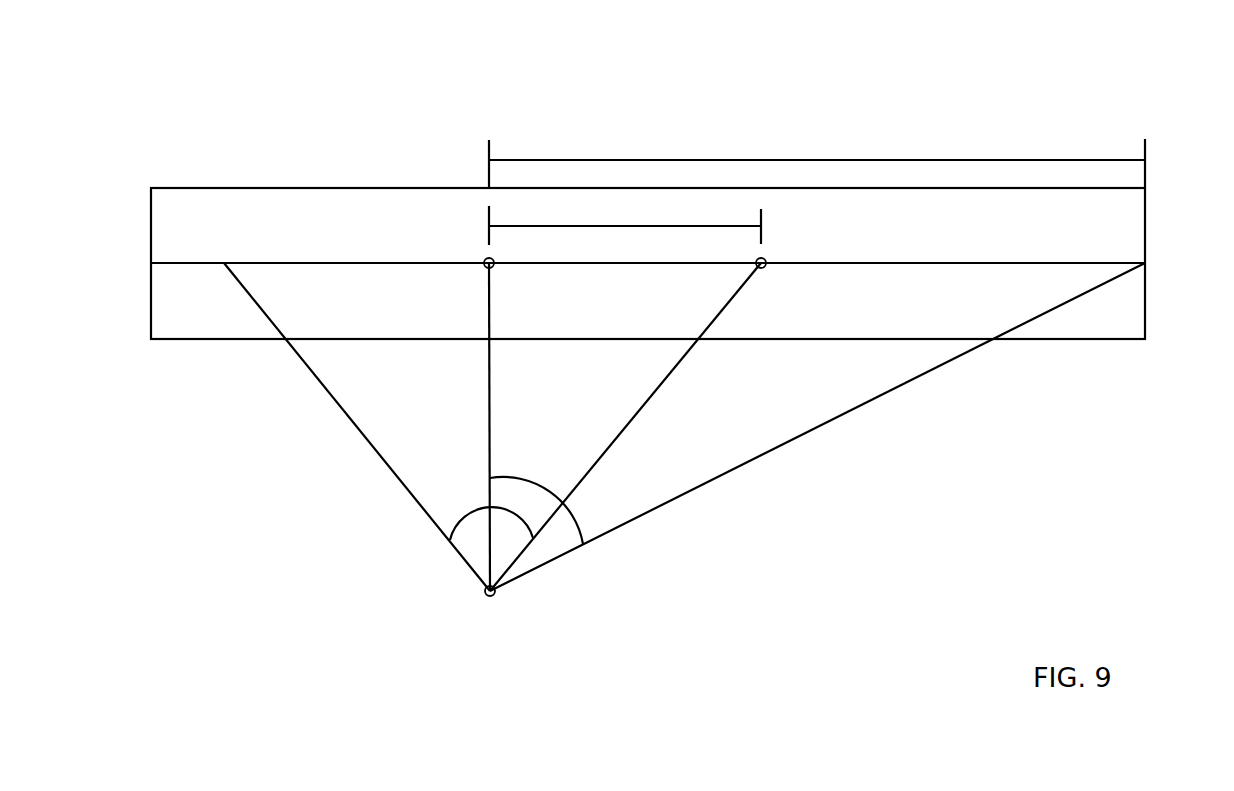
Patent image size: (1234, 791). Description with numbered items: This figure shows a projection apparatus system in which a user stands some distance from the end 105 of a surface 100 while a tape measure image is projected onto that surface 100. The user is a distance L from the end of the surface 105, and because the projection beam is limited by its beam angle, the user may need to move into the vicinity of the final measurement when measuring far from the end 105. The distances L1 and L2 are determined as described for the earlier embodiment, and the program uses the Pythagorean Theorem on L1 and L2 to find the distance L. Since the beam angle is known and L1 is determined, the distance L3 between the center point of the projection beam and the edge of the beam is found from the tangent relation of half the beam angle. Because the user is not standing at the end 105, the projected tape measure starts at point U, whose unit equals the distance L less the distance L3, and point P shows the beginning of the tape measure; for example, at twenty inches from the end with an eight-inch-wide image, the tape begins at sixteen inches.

The surface 100 is at (226, 188).
The end of the surface 105 is at (1146, 263).
The distance L is at (647, 160).
The distance L1 is at (490, 393).
The distance L2 is at (760, 457).
The distance L3 is at (592, 227).
The point P is at (767, 264).
The point U is at (503, 593).